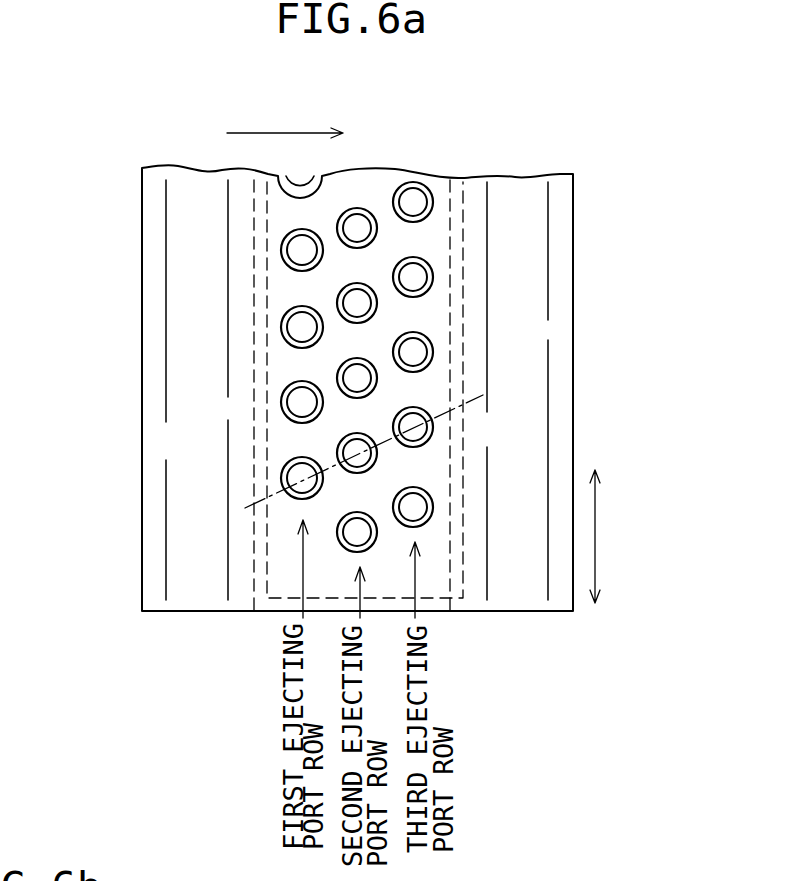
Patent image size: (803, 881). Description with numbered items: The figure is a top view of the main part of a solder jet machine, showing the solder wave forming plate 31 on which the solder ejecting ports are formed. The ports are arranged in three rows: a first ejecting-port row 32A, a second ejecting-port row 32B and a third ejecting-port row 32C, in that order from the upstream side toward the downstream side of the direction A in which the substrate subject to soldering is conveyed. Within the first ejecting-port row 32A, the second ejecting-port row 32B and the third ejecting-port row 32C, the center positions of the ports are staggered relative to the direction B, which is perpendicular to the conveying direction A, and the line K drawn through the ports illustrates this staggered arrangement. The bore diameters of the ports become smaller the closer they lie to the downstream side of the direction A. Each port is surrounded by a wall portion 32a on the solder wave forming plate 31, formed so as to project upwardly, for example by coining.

The solder wave forming plate 31 is at (188, 535).
The first ejecting-port row 32A is at (300, 327).
The second ejecting-port row 32B is at (360, 306).
The third ejecting-port row 32C is at (415, 278).
The wall portion 32a is at (293, 347).
The line connecting ejecting ports K is at (440, 415).
The direction A is at (285, 119).
The direction B is at (609, 536).